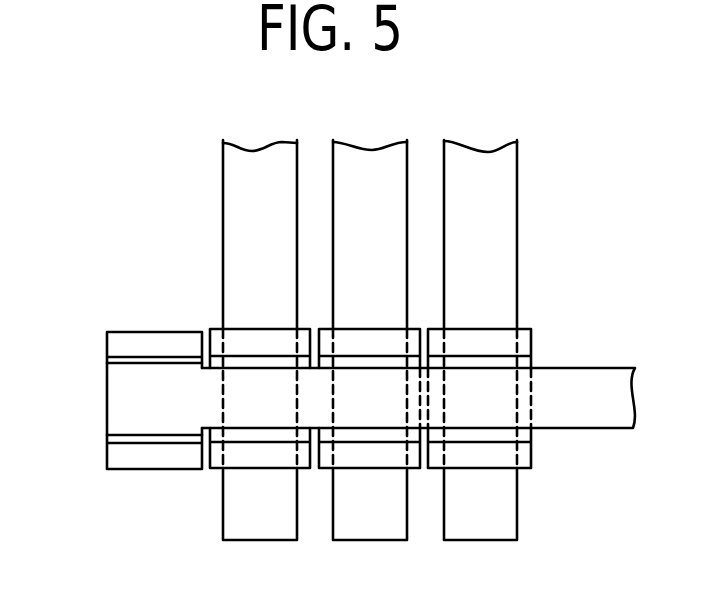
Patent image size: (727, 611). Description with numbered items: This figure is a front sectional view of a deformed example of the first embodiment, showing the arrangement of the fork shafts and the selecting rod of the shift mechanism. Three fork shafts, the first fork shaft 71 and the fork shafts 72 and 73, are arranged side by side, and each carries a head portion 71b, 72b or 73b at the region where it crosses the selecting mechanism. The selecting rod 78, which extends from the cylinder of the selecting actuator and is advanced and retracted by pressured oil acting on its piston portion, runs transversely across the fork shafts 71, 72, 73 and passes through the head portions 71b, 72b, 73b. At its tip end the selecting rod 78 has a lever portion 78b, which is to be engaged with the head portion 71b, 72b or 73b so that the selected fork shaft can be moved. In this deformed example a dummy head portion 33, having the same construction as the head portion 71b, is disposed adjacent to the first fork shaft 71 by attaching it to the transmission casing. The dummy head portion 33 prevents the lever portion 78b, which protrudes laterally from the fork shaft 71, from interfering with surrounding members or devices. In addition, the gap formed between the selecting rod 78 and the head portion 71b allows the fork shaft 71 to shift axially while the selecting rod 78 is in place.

The first fork shaft 71 is at (232, 229).
The fork shaft 72 is at (382, 228).
The fork shaft 73 is at (492, 232).
The head portion 71b is at (222, 470).
The head portion 72b is at (327, 470).
The head portion 73b is at (520, 333).
The selecting rod 78 is at (601, 357).
The lever portion 78b is at (122, 398).
The dummy head portion 33 is at (147, 342).